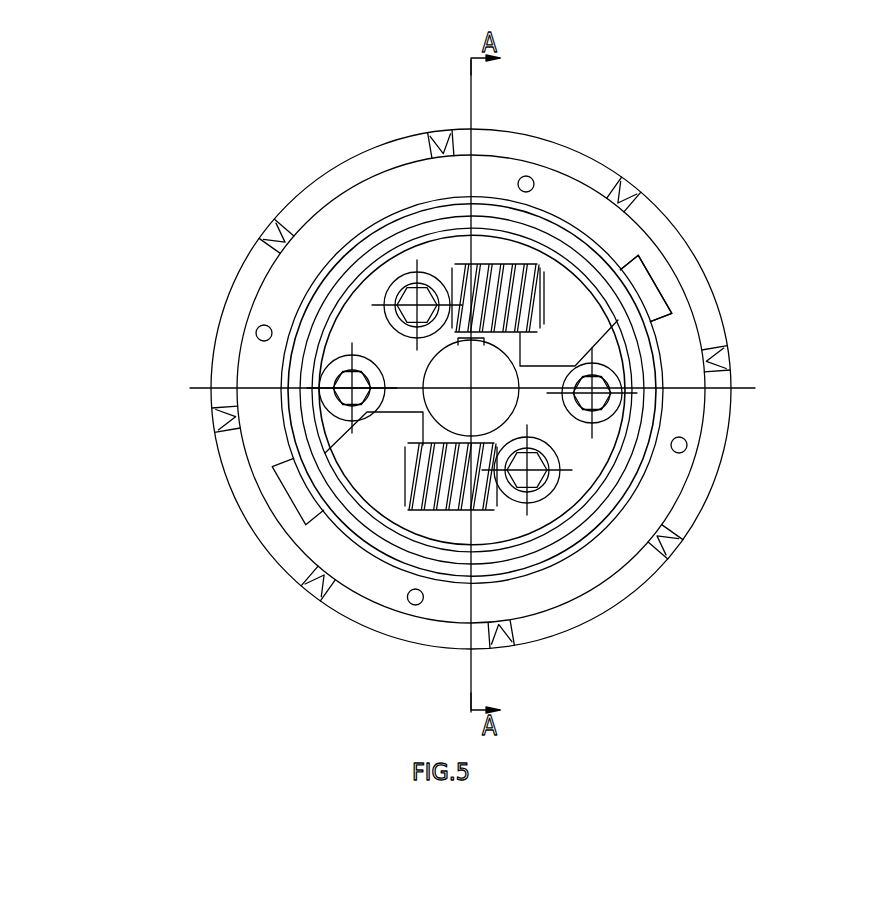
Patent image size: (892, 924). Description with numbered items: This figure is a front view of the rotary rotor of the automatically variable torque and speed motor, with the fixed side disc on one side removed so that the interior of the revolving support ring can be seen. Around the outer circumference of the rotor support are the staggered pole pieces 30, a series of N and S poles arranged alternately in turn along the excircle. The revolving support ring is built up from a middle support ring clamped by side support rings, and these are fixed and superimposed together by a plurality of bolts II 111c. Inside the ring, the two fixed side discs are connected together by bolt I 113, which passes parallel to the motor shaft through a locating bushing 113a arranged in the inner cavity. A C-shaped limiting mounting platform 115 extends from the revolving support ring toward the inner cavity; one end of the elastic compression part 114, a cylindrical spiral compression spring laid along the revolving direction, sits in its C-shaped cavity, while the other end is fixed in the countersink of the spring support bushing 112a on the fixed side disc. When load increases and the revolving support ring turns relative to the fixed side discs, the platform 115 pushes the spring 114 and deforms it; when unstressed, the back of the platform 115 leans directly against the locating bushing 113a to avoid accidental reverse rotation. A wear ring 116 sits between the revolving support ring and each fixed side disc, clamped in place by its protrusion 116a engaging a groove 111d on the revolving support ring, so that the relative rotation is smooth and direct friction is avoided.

The staggered pole piece 30 is at (229, 362).
The bolt I 113 is at (341, 360).
The spring support bushing 112a is at (406, 268).
The elastic compression part 114 is at (481, 283).
The bolt II 111c is at (529, 176).
The C-shaped limiting mounting platform 115 is at (553, 294).
The groove 111d is at (654, 257).
The protrusion 116a is at (651, 285).
The locating bushing 113a is at (628, 378).
The wear ring 116 is at (637, 477).